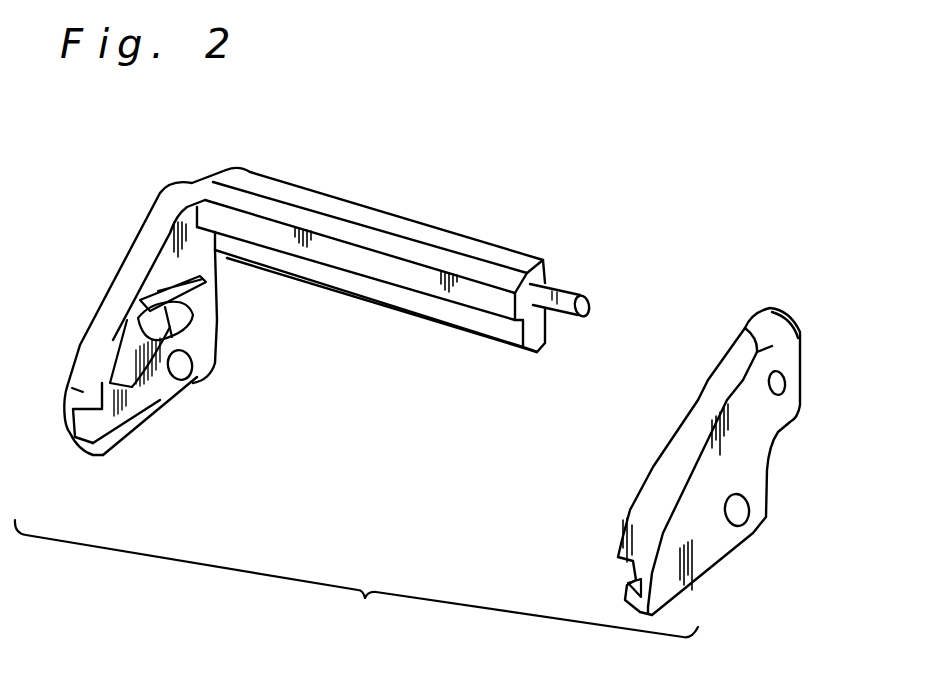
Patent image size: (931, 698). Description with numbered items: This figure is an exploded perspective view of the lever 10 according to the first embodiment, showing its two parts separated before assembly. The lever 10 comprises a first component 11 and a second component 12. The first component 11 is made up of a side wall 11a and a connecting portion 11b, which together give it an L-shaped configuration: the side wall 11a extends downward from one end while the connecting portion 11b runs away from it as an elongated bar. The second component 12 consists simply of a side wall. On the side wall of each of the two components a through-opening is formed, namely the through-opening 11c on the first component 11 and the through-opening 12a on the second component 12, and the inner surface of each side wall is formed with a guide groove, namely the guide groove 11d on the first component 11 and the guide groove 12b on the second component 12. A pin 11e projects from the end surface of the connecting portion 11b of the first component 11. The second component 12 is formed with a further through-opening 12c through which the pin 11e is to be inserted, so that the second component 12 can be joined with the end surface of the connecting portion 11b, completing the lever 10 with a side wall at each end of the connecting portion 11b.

The lever 10 is at (572, 216).
The first component 11 is at (381, 210).
The side wall 11a is at (127, 283).
The connecting portion 11b is at (406, 234).
The through-opening 11c is at (188, 377).
The guide groove 11d is at (95, 457).
The pin 11e is at (568, 290).
The second component 12 is at (743, 313).
The through-opening 12a is at (746, 525).
The guide groove 12b is at (629, 581).
The through-opening 12c is at (769, 390).